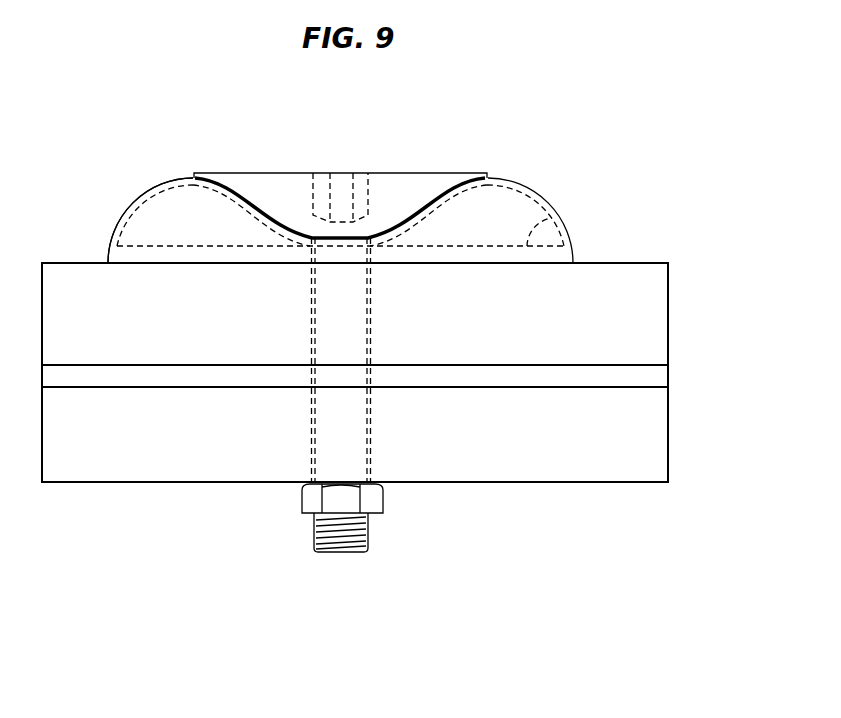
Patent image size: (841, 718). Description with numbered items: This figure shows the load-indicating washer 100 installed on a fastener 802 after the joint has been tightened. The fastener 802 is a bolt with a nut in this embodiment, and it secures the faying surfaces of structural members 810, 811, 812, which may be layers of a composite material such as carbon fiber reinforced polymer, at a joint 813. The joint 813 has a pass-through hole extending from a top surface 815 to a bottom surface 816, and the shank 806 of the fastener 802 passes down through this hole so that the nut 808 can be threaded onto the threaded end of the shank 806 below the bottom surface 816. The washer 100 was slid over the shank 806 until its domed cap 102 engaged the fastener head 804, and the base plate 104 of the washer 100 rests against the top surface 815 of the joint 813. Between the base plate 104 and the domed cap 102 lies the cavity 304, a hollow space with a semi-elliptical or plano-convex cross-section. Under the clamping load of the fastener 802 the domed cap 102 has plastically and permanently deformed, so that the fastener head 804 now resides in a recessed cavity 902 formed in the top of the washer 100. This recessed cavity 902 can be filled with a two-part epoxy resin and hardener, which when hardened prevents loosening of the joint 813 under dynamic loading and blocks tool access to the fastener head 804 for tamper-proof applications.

The load-indicating washer 100 is at (549, 174).
The domed cap 102 is at (162, 186).
The base plate 104 is at (553, 219).
The cavity 304 is at (144, 225).
The fastener 802 is at (263, 165).
The fastener head 804 is at (389, 172).
The shank 806 is at (368, 527).
The nut 808 is at (313, 500).
The structural member 810 is at (660, 314).
The structural member 811 is at (660, 377).
The structural member 812 is at (660, 421).
The joint 813 is at (738, 263).
The top surface 815 is at (650, 256).
The bottom surface 816 is at (584, 490).
The recessed cavity 902 is at (438, 191).